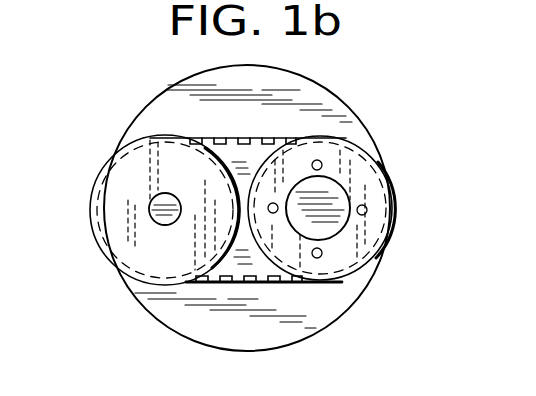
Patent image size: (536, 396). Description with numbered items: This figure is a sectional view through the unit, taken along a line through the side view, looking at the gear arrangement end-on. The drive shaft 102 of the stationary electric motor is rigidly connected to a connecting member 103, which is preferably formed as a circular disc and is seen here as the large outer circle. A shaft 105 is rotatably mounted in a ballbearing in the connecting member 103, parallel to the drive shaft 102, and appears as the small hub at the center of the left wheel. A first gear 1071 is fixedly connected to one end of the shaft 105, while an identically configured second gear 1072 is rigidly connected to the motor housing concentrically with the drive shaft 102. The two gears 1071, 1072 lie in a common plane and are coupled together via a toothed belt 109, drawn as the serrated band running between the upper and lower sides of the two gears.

The drive shaft 102 is at (347, 228).
The connecting member 103 is at (330, 310).
The shaft 105 is at (150, 209).
The first gear 1071 is at (138, 226).
The second gear 1072 is at (360, 222).
The toothed belt 109 is at (283, 138).